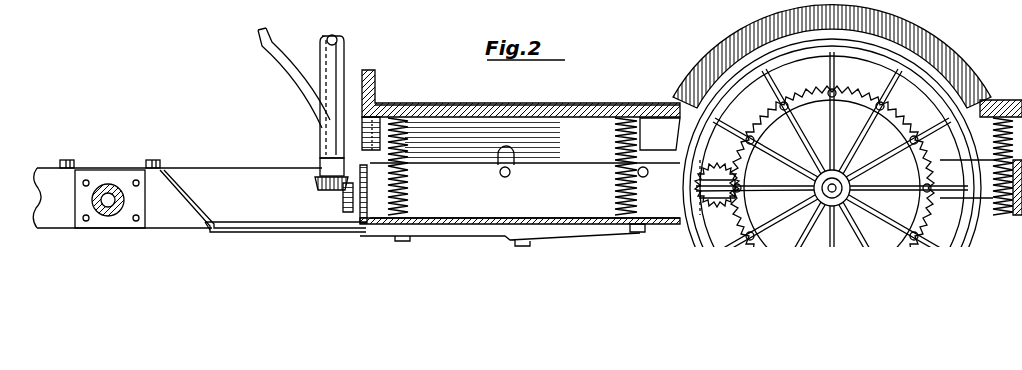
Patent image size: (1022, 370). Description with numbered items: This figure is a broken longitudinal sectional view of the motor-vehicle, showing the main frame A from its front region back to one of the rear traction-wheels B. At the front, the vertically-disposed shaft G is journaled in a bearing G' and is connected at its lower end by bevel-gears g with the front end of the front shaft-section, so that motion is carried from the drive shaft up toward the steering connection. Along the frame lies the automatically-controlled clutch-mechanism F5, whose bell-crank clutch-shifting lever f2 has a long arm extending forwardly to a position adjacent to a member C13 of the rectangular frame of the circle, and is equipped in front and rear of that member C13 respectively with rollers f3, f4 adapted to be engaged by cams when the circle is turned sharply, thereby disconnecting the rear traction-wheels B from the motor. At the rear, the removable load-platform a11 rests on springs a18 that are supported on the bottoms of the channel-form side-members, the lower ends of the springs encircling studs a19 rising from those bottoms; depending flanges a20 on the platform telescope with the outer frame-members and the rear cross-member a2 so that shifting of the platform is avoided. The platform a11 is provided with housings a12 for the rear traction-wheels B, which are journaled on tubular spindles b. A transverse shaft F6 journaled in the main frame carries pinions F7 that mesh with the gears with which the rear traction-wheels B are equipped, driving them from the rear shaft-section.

The main frame A is at (48, 218).
The member of rectangular frame of the circle C13 is at (110, 196).
The roller f3 is at (72, 160).
The roller f4 is at (166, 160).
The automatically-controlled clutch-mechanism F5 is at (345, 258).
The bearing G' is at (294, 78).
The vertically-disposed shaft G is at (307, 107).
The bevel-gears g is at (343, 200).
The depending flanges a20 is at (490, 130).
The removable load-platform a11 is at (582, 100).
The studs a19 is at (415, 190).
The springs a18 is at (415, 140).
The bell-crank clutch-shifting lever f2 is at (645, 228).
The rear traction-wheels B is at (968, 95).
The housings a12 is at (950, 90).
The tubular spindles b is at (848, 178).
The pinions F7 is at (716, 165).
The transverse shaft F6 is at (718, 212).
The cross-member a2 is at (1012, 216).